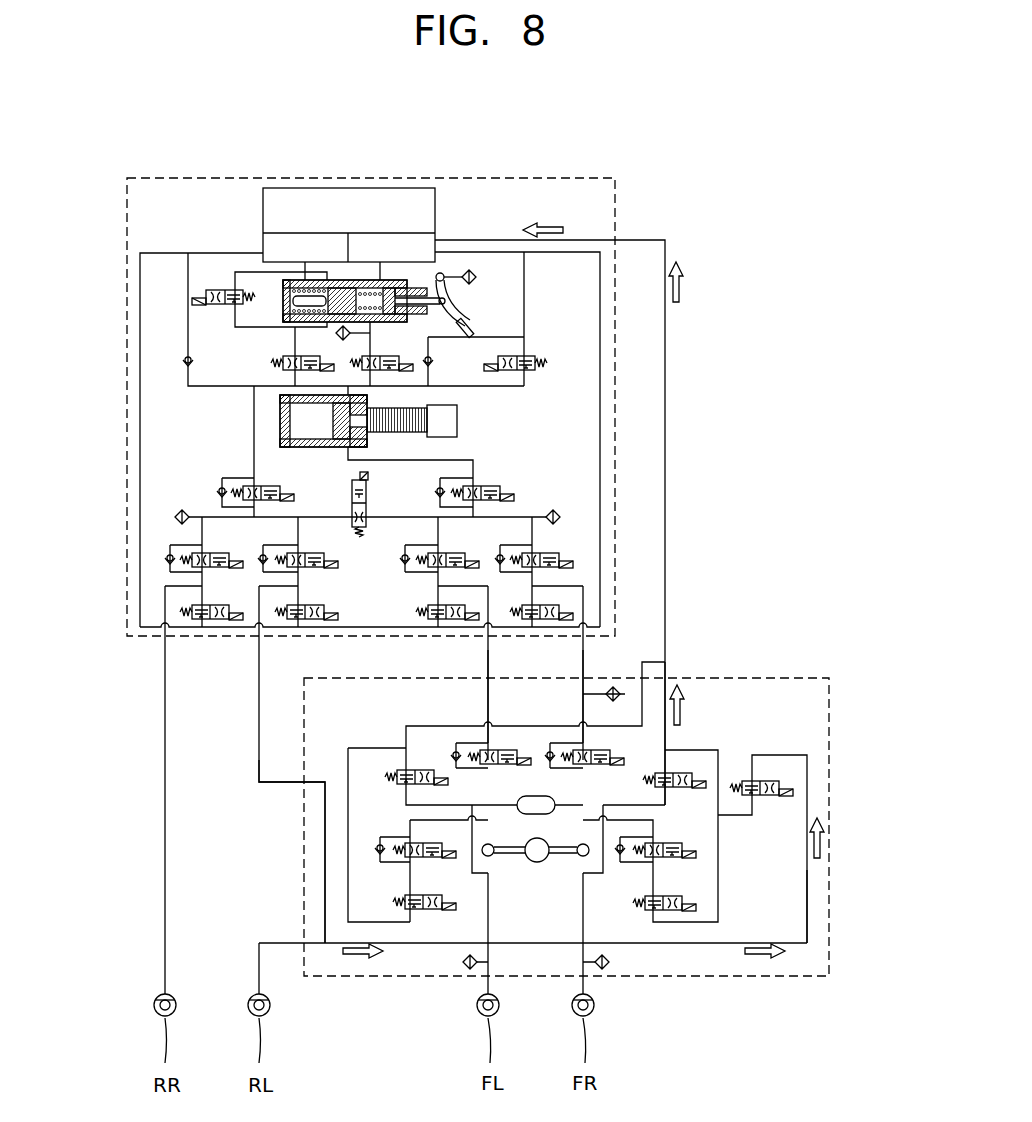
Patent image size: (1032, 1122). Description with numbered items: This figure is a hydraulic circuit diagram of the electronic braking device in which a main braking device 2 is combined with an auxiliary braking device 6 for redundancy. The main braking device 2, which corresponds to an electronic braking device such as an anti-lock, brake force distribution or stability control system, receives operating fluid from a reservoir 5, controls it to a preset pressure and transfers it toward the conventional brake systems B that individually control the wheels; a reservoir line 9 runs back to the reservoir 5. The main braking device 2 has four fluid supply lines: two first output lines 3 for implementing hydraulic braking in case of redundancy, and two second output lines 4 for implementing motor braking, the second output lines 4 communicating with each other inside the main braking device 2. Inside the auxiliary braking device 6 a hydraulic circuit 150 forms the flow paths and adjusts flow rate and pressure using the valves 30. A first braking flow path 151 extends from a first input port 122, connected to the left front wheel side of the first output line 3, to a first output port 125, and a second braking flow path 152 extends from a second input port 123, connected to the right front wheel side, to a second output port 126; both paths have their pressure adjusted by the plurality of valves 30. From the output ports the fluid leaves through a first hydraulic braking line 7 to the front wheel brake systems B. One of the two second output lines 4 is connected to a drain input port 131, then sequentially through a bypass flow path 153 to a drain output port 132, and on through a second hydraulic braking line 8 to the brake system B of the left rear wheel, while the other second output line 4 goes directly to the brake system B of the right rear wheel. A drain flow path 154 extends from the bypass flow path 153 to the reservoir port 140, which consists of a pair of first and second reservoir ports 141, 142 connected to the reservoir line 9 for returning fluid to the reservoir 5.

The main braking device 2 is at (122, 345).
The reservoir 5 is at (357, 203).
The reservoir line 9 is at (667, 415).
The first output line 3 is at (583, 668).
The second output line 4 is at (259, 694).
The auxiliary braking device 6 is at (805, 672).
The first input port 122 is at (488, 678).
The second input port 123 is at (583, 682).
The valve 30 is at (482, 750).
The reservoir port 140 is at (600, 704).
The first reservoir port 141 is at (642, 665).
The second reservoir port 142 is at (665, 678).
The hydraulic circuit 150 is at (792, 740).
The drain flow path 154 is at (807, 892).
The drain input port 131 is at (302, 782).
The bypass flow path 153 is at (325, 862).
The drain output port 132 is at (304, 943).
The first braking flow path 151 is at (488, 917).
The second braking flow path 152 is at (583, 908).
The first output port 125 is at (488, 978).
The second output port 126 is at (583, 980).
The second hydraulic braking line 8 is at (259, 968).
The first hydraulic braking line 7 is at (482, 990).
The CBS (Conventional Brake System) B is at (153, 998).